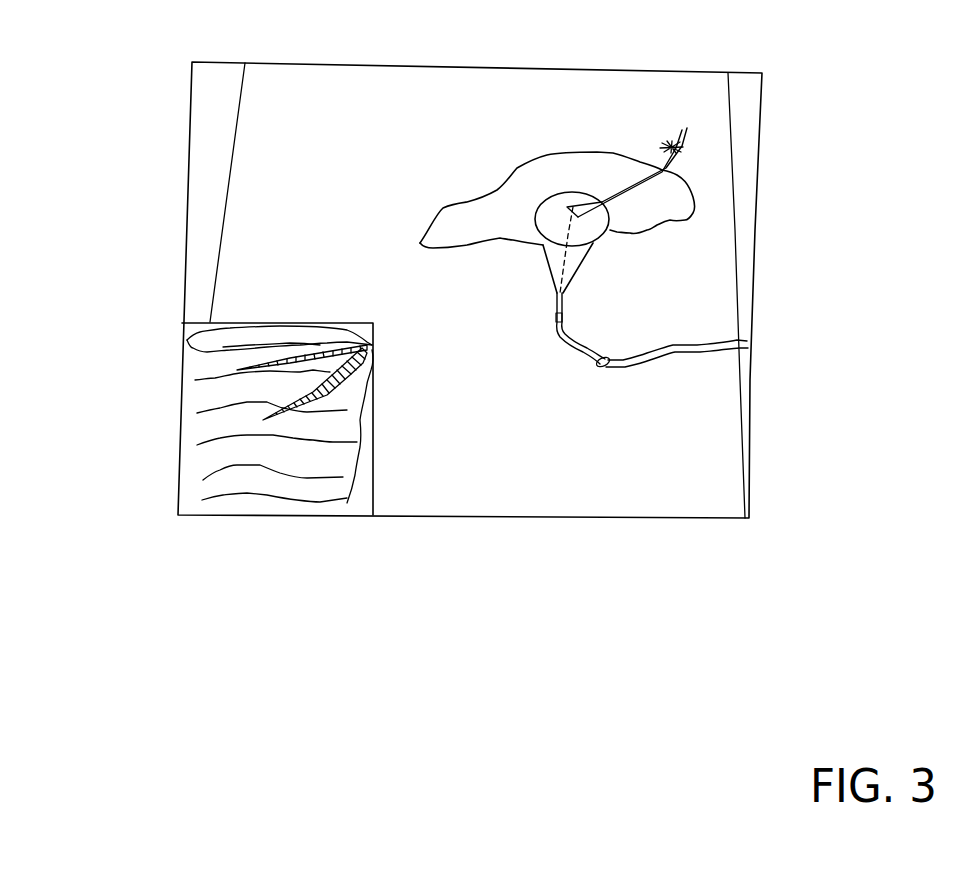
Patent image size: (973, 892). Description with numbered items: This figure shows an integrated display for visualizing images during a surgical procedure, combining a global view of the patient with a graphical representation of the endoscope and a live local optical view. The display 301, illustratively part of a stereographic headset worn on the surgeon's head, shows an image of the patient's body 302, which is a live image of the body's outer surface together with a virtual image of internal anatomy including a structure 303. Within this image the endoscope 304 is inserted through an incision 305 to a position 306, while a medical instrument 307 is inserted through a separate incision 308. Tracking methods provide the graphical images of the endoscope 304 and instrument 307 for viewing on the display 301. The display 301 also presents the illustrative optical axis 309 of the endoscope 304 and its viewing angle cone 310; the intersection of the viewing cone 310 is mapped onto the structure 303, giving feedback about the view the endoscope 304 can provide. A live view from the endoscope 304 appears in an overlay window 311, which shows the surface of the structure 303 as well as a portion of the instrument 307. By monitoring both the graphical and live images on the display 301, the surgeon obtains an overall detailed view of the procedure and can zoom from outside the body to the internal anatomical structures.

The display 301 is at (865, 78).
The patient's body 302 is at (327, 43).
The structure 303 is at (528, 175).
The endoscope 304 is at (562, 312).
The incision 305 is at (642, 404).
The position 306 is at (556, 294).
The medical instrument 307 is at (660, 151).
The incision 308 is at (683, 150).
The optical axis 309 is at (563, 257).
The viewing angle cone 310 is at (597, 222).
The overlay window 311 is at (364, 482).